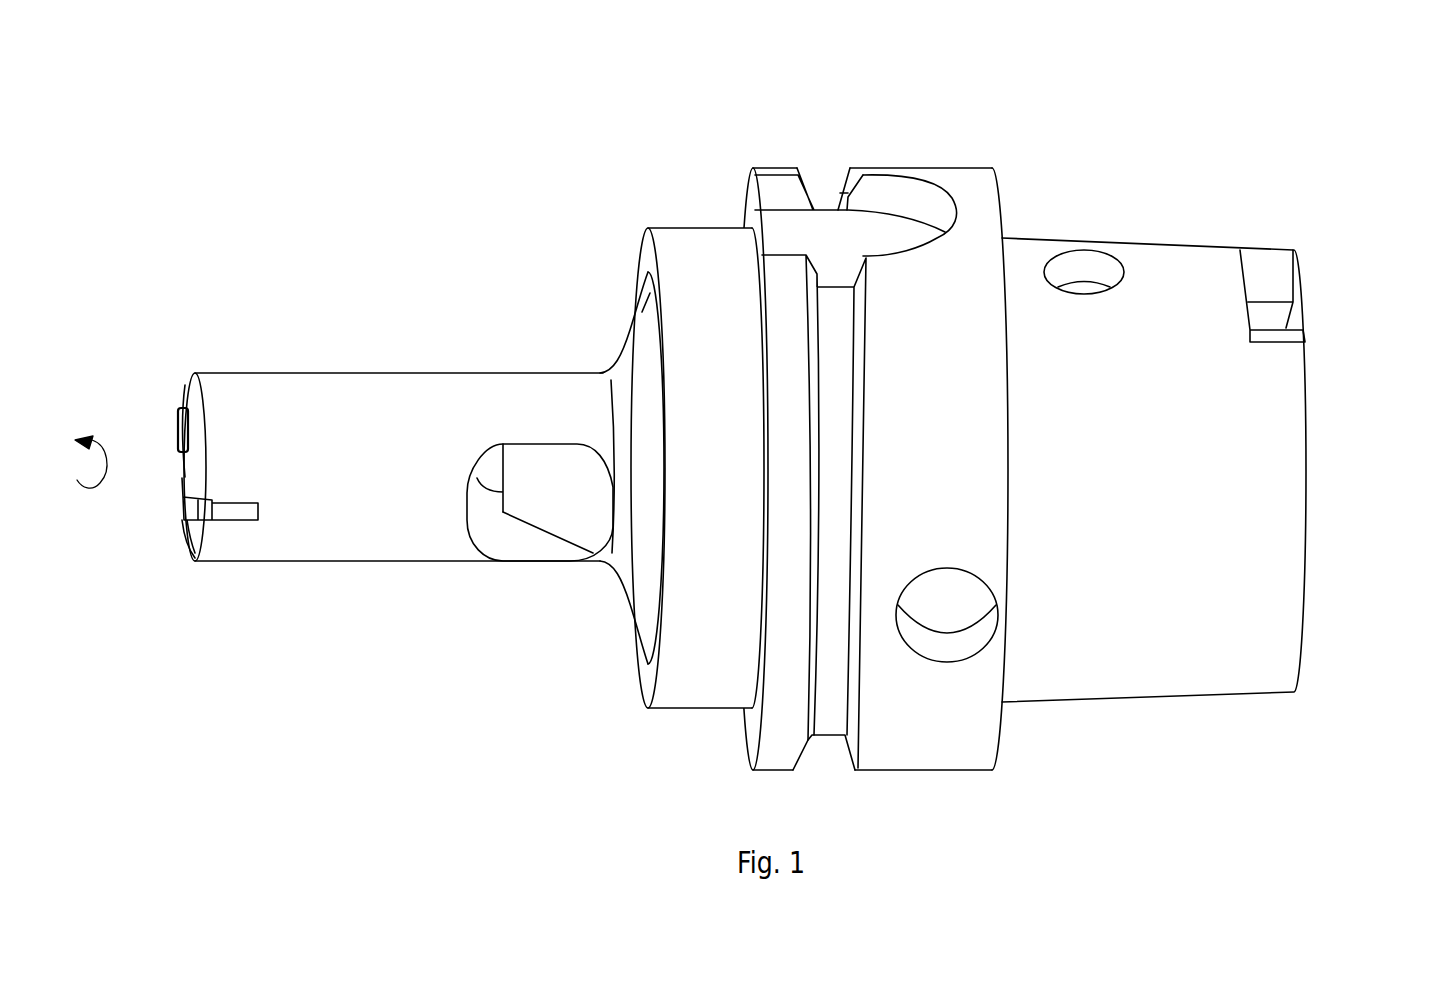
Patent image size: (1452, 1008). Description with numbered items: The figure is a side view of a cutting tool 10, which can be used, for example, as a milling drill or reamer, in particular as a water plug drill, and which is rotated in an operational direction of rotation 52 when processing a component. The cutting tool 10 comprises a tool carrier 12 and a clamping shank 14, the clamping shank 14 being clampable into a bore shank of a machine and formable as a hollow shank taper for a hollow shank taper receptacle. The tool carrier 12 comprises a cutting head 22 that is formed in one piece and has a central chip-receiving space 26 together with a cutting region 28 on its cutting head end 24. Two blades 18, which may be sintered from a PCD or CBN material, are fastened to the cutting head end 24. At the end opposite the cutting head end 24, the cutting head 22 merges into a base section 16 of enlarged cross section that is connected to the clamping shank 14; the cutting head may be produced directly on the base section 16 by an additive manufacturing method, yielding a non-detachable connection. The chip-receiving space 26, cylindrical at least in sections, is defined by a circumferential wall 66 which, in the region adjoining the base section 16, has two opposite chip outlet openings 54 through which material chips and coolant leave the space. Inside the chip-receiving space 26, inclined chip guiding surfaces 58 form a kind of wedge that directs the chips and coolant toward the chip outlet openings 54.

The cutting tool 10 is at (753, 407).
The tool carrier 12 is at (417, 436).
The clamping shank 14 is at (1177, 273).
The base section 16 is at (695, 693).
The blade 18 is at (185, 512).
The cutting head 22 is at (393, 525).
The cutting head end 24 is at (129, 388).
The cutting region 28 is at (160, 418).
The chip-receiving space 26 is at (497, 520).
The operational direction of rotation 52 is at (92, 490).
The chip outlet opening 54 is at (545, 562).
The chip guiding surface 58 is at (540, 522).
The circumferential wall 66 is at (383, 390).